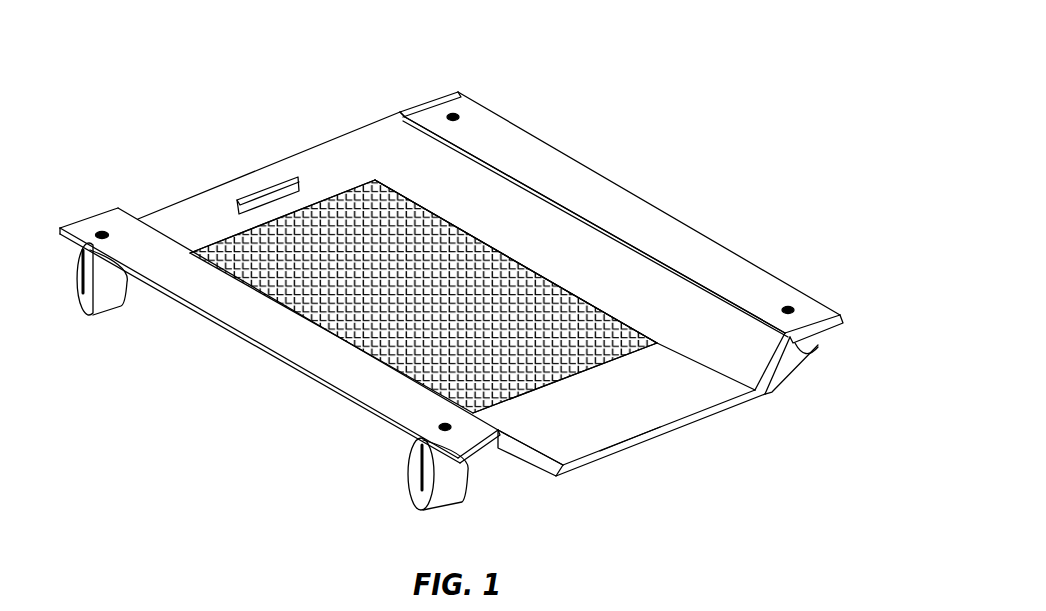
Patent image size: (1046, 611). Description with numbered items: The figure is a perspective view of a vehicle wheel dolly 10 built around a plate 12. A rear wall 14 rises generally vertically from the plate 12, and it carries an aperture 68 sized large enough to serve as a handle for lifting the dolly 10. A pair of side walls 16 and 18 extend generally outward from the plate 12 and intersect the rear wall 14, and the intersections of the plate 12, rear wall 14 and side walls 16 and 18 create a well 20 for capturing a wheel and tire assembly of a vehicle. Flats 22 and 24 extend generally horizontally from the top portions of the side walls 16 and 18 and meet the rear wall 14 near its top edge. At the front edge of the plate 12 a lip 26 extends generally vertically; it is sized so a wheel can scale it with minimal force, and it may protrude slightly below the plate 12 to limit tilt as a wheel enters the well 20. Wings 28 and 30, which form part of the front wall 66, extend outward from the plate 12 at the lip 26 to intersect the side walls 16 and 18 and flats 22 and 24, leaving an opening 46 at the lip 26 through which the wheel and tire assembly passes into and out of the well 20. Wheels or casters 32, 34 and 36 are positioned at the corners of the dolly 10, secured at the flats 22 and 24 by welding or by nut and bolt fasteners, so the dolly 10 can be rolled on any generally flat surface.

The vehicle wheel dolly 10 is at (626, 94).
The plate 12 is at (638, 415).
The rear wall 14 is at (338, 173).
The side wall 16 is at (535, 238).
The side wall 18 is at (345, 340).
The well 20 is at (397, 235).
The flat 22 is at (660, 233).
The flat 24 is at (205, 292).
The lip 26 is at (713, 415).
The wing 28 is at (800, 338).
The wing 30 is at (482, 445).
The wheel or caster 32 is at (798, 357).
The wheel or caster 34 is at (420, 490).
The wheel or caster 36 is at (107, 297).
The opening 46 is at (630, 432).
The front wall 66 is at (540, 463).
The aperture 68 is at (246, 201).